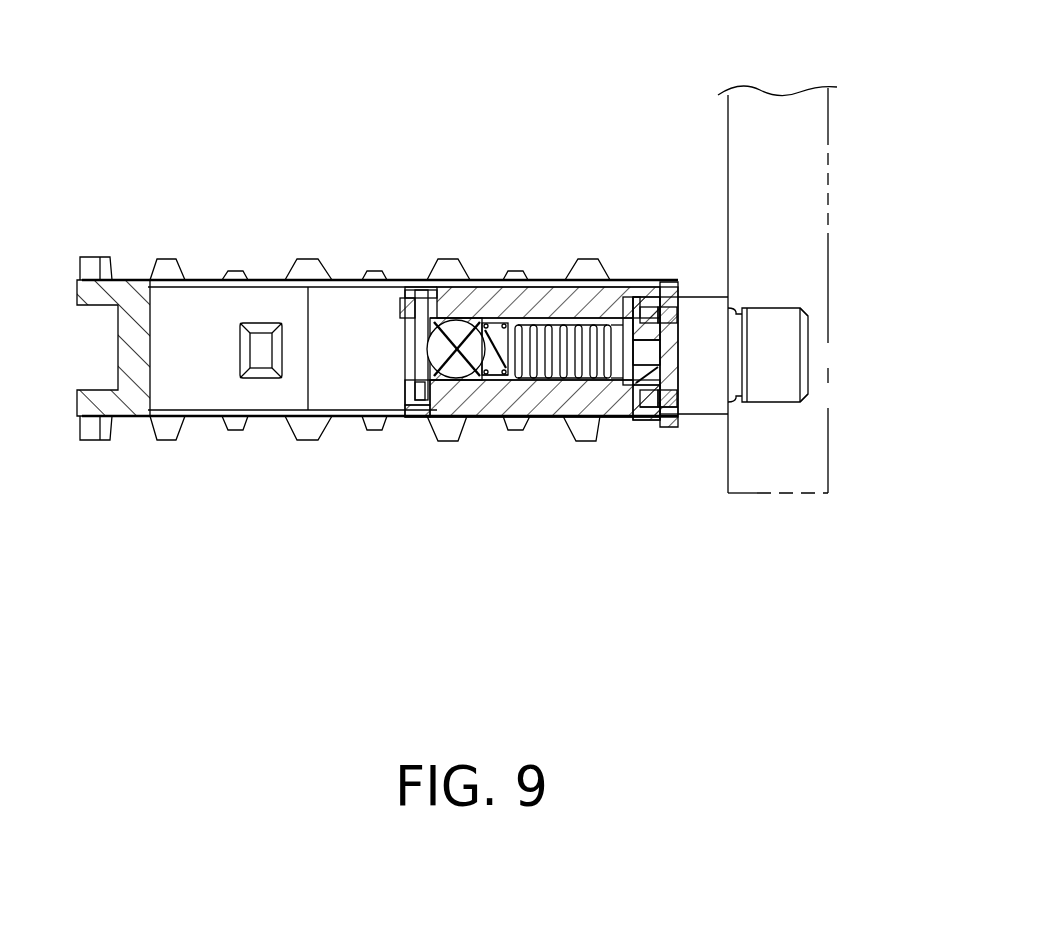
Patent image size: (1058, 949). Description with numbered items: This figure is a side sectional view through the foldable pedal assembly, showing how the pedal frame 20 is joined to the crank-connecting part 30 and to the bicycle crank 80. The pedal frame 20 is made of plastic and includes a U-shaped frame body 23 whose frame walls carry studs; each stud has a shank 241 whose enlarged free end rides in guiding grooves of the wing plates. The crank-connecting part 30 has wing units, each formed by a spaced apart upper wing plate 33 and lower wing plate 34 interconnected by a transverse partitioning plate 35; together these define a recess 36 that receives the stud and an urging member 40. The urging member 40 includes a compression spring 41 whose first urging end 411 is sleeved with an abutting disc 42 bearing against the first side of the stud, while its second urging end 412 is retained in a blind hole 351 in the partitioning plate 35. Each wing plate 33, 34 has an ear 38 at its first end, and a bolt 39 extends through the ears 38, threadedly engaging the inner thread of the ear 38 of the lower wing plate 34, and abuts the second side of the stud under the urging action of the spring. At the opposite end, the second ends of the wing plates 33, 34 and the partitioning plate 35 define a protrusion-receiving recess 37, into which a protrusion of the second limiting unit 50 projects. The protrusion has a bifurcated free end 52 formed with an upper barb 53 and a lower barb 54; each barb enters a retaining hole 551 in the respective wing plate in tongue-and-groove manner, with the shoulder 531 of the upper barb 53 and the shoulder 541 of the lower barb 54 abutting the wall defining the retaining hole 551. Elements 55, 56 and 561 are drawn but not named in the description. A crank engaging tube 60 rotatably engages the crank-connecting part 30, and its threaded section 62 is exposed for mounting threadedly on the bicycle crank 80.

The pedal frame 20 is at (302, 248).
The U-shaped frame body 23 is at (203, 279).
The shank 241 is at (425, 436).
The crank-connecting part 30 is at (444, 276).
The upper wing plate 33 is at (470, 292).
The lower wing plate 34 is at (455, 378).
The partitioning plate 35 is at (620, 386).
The blind hole 351 is at (610, 380).
The recess 36 is at (522, 322).
The protrusion-receiving recess 37 is at (580, 322).
The ear 38 is at (407, 291).
The bolt 39 is at (414, 318).
The urging member 40 is at (540, 397).
The compression spring 41 is at (564, 378).
The first urging end 411 is at (498, 378).
The second urging end 412 is at (607, 380).
The abutting disc 42 is at (490, 378).
The second limiting unit 50 is at (645, 340).
The bifurcated free end 52 is at (650, 345).
The upper barb 53 is at (642, 300).
The shoulder 531 is at (680, 297).
The lower barb 54 is at (645, 425).
The shoulder 541 is at (663, 393).
The slot 55 is at (658, 320).
The retaining hole 551 is at (683, 312).
The lower slot 56 is at (665, 410).
The lower slot wall 561 is at (690, 402).
The crank engaging tube 60 is at (767, 290).
The threaded section 62 is at (794, 303).
The bicycle crank 80 is at (828, 133).